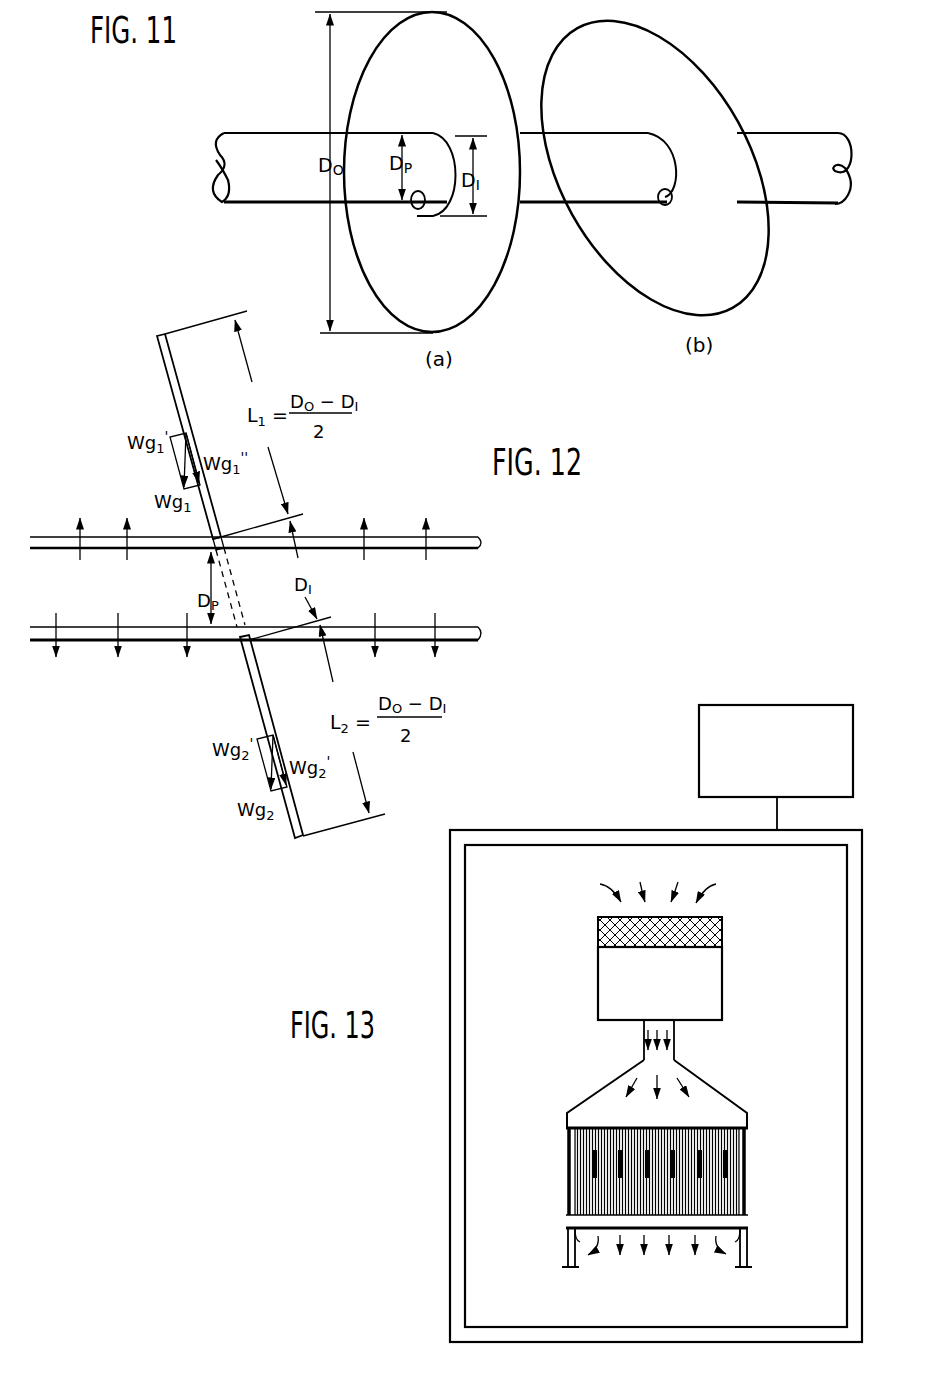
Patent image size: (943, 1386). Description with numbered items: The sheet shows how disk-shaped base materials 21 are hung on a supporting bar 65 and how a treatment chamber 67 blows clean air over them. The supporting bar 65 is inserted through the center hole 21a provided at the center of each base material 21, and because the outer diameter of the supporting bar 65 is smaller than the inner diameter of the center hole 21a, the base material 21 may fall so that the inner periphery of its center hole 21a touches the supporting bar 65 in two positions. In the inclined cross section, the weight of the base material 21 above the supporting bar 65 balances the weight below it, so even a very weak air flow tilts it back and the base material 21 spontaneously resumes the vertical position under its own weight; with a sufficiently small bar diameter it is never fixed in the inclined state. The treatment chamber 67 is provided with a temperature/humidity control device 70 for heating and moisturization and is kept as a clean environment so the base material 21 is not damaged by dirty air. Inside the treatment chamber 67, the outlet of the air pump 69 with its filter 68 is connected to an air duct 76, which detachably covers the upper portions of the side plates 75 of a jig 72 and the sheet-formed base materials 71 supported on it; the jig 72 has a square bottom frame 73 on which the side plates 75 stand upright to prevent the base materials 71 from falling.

In FIG. 11, the base material 21 is at (492, 62).
In FIG. 12, the base material 21 is at (166, 384).
In FIG. 11, the center hole 21a is at (412, 210).
In FIG. 11, the supporting bar 65 is at (793, 140).
In FIG. 12, the supporting bar 65 is at (56, 541).
In FIG. 13, the treatment chamber 67 is at (448, 975).
In FIG. 13, the filter 68 is at (722, 928).
In FIG. 13, the air pump 69 is at (714, 1000).
In FIG. 13, the temperature/humidity control device 70 is at (699, 751).
In FIG. 13, the base materials 71 is at (713, 1140).
In FIG. 13, the jig 72 is at (564, 1227).
In FIG. 13, the bottom frame 73 is at (640, 1222).
In FIG. 13, the side plates 75 is at (567, 1172).
In FIG. 13, the air duct 76 is at (716, 1106).